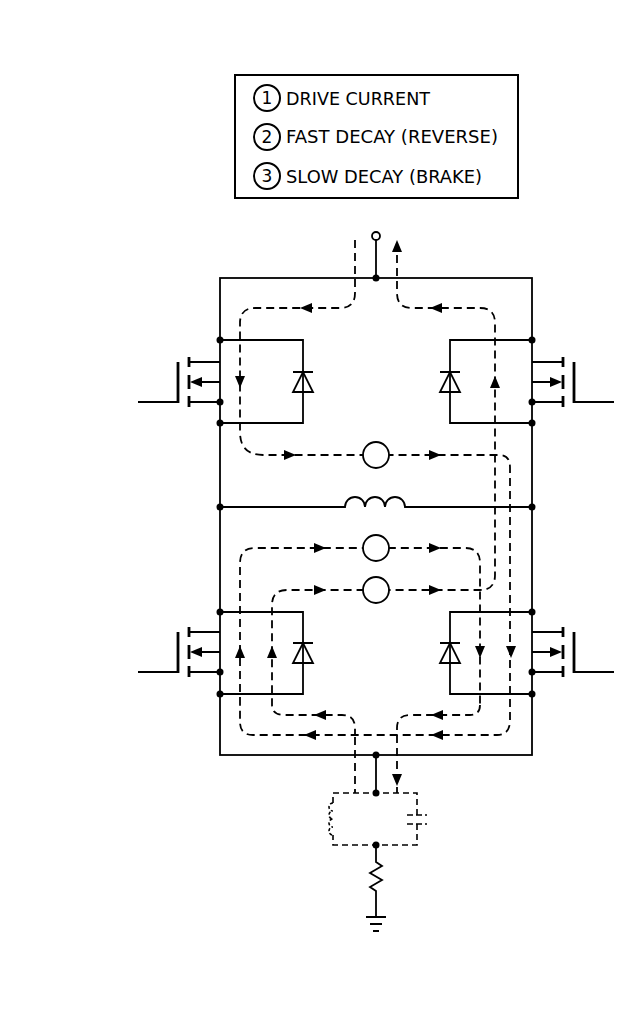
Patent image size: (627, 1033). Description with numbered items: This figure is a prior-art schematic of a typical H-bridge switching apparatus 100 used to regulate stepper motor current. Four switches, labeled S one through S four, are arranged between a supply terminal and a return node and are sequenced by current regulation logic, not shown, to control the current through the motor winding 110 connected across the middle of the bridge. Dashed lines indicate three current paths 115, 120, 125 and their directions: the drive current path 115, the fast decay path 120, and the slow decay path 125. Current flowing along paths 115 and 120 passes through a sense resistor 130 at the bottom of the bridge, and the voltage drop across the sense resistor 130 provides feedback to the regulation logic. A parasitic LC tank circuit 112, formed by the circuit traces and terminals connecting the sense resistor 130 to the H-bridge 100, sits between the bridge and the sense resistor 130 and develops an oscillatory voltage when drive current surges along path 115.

The H-bridge switching apparatus 100 is at (279, 264).
The winding 110 is at (366, 492).
The parasitic LC tank circuit 112 is at (456, 822).
The drive current path 115 is at (376, 442).
The fast decay current path 120 is at (375, 604).
The slow decay current path 125 is at (366, 538).
The sense resistor 130 is at (386, 880).